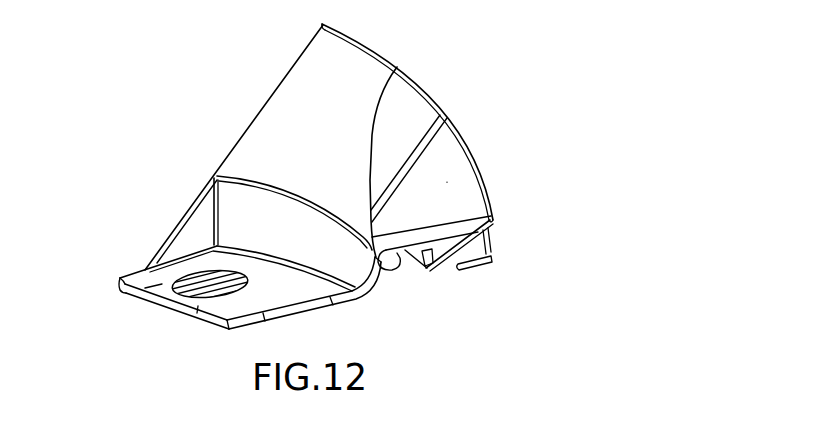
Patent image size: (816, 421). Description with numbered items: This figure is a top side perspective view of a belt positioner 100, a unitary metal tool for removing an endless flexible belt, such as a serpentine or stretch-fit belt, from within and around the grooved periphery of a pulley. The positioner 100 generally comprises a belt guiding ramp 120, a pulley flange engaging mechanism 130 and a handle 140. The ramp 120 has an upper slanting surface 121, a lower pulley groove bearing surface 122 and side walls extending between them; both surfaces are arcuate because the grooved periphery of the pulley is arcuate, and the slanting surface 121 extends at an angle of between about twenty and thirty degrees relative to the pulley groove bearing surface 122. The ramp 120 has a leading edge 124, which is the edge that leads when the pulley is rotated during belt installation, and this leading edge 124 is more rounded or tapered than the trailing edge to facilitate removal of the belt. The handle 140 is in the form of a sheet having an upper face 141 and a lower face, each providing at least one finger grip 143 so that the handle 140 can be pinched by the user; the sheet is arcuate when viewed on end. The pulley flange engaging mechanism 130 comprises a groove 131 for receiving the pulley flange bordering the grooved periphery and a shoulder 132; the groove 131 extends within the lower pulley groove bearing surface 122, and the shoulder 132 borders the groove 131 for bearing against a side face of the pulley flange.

The belt positioner 100 is at (113, 299).
The belt guiding ramp 120 is at (252, 108).
The upper slanting surface 121 is at (417, 110).
The leading edge 124 is at (447, 182).
The pulley flange engaging mechanism 130 is at (402, 286).
The groove 131 is at (404, 143).
The shoulder 132 is at (493, 218).
The lower pulley groove bearing surface 122 is at (462, 263).
The handle 140 is at (203, 323).
The upper face 141 is at (160, 287).
The finger grip 143 is at (247, 283).